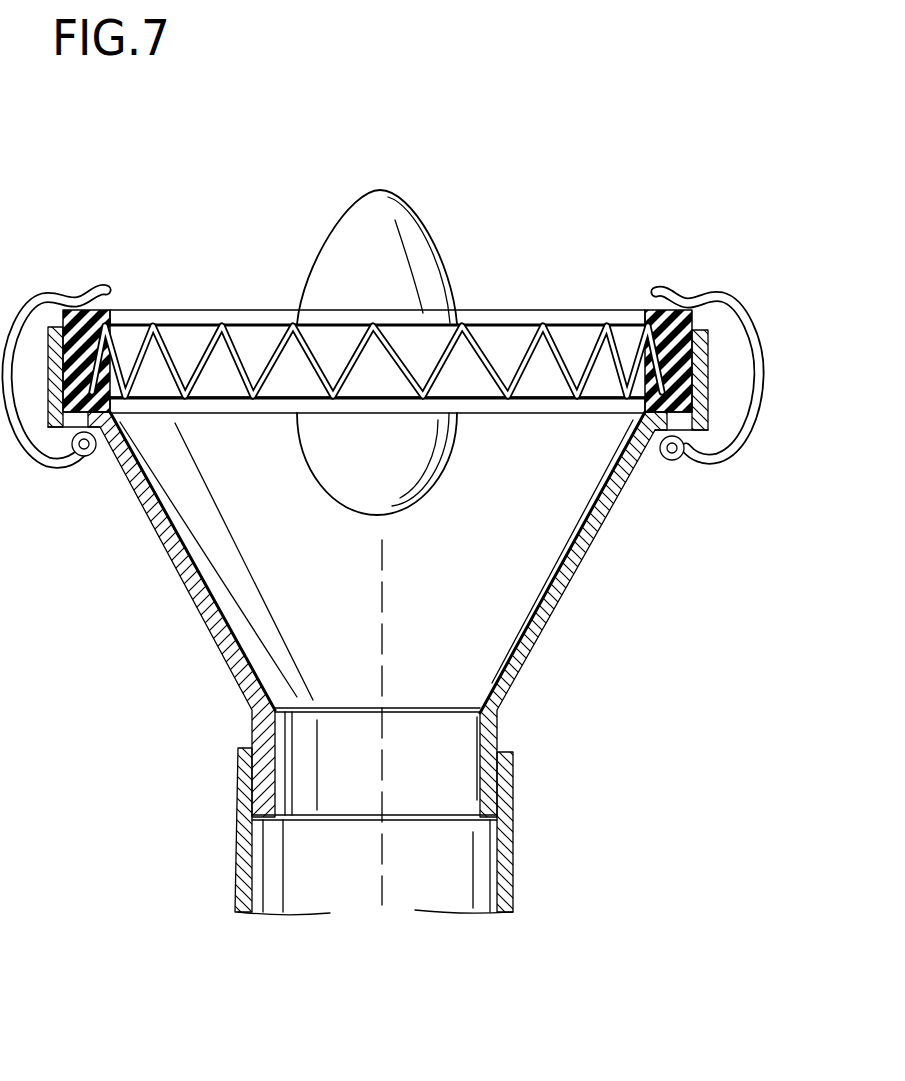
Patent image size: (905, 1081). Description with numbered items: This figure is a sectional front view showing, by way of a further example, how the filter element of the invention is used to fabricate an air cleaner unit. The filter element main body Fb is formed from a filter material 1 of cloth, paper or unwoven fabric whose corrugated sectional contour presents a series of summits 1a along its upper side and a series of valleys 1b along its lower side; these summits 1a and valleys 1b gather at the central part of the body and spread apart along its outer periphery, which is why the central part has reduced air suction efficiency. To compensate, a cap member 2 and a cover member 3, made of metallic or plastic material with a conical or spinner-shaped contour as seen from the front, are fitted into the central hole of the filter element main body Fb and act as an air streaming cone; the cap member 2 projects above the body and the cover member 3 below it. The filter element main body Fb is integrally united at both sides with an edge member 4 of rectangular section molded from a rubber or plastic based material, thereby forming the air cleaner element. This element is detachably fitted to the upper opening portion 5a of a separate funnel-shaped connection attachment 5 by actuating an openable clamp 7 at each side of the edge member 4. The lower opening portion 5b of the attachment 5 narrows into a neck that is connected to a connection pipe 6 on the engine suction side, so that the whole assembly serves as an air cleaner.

The filter element main body Fb is at (177, 298).
The filter material 1 is at (500, 350).
The summits 1a is at (218, 324).
The valleys 1b is at (207, 372).
The cap member 2 is at (410, 235).
The cover member 3 is at (413, 447).
The edge member 4 is at (672, 340).
The funnel-shaped connection attachment 5 is at (563, 598).
The upper opening portion 5a is at (688, 410).
The lower opening portion 5b is at (484, 776).
The connection pipe 6 is at (513, 858).
The openable clamp 7 is at (55, 293).